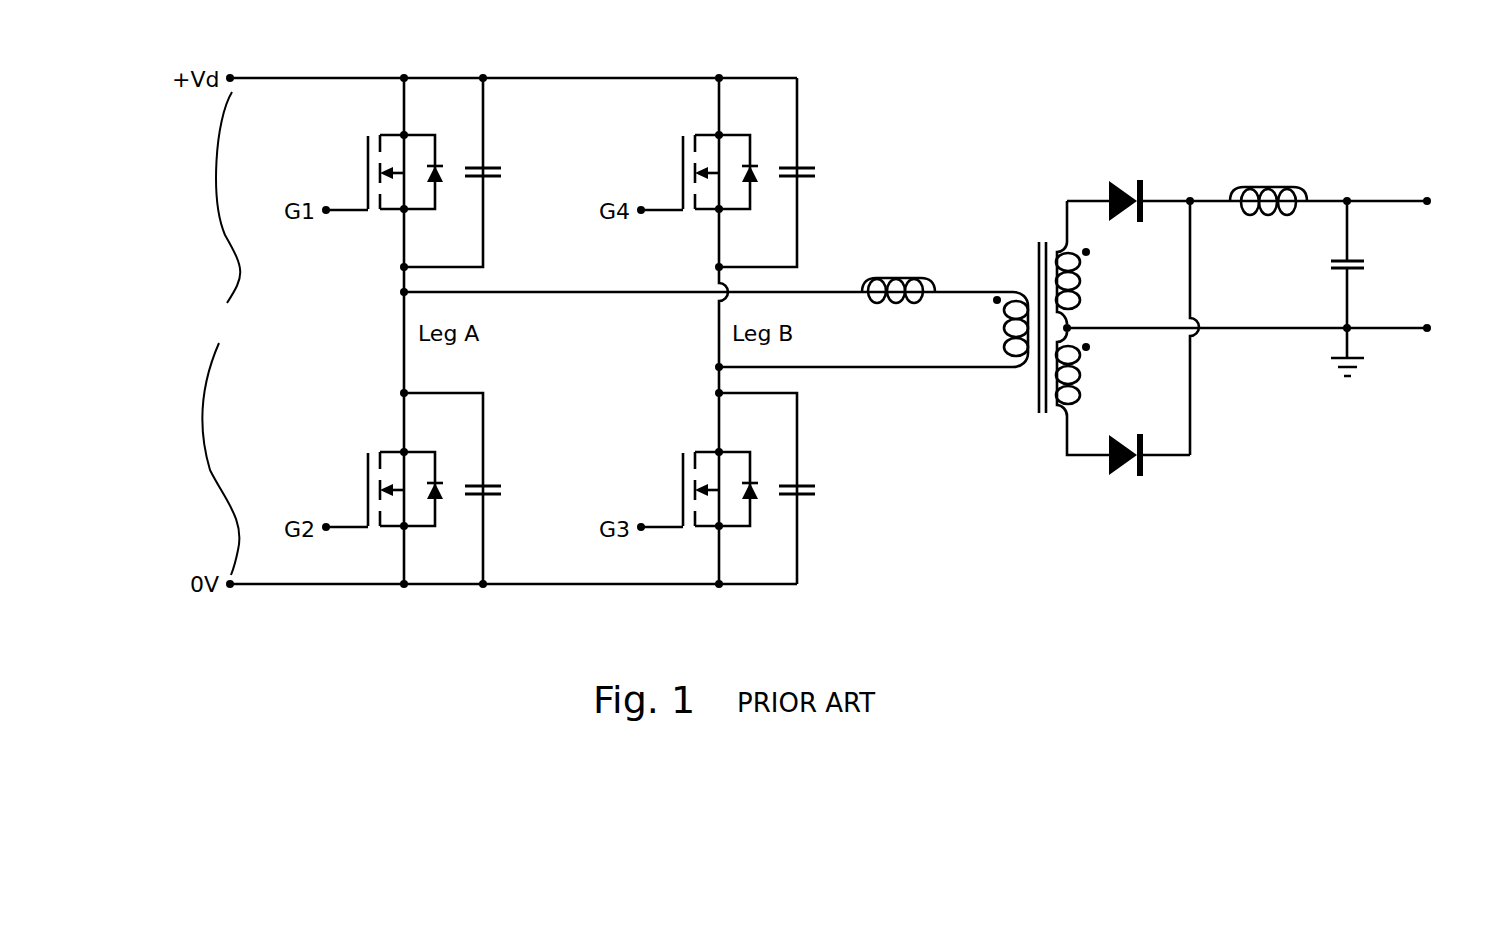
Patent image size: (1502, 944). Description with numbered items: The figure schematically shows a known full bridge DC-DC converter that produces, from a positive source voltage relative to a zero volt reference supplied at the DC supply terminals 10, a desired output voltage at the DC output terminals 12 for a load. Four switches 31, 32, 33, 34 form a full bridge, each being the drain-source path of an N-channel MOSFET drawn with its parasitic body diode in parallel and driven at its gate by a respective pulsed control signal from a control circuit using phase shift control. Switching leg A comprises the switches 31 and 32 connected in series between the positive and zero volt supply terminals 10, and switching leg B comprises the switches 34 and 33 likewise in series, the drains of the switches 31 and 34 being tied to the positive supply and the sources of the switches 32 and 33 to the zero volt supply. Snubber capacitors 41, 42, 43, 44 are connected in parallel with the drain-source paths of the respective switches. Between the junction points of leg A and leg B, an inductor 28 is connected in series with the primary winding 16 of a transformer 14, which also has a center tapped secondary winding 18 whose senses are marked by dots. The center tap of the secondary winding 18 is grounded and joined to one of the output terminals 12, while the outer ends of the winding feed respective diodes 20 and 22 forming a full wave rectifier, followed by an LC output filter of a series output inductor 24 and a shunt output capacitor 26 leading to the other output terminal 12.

The DC supply terminals 10 is at (222, 333).
The DC output terminals 12 is at (1427, 322).
The transformer 14 is at (1035, 265).
The primary winding 16 is at (1003, 337).
The center tapped secondary winding 18 is at (1079, 298).
The diode 20 is at (1123, 181).
The diode 22 is at (1123, 434).
The series output inductor 24 is at (1280, 185).
The shunt output capacitor 26 is at (1335, 270).
The inductor 28 is at (908, 273).
The switch 31 is at (355, 166).
The switch 32 is at (355, 485).
The switch 33 is at (670, 485).
The switch 34 is at (670, 166).
The snubber capacitor 41 is at (503, 172).
The snubber capacitor 42 is at (503, 490).
The snubber capacitor 43 is at (818, 490).
The snubber capacitor 44 is at (818, 172).